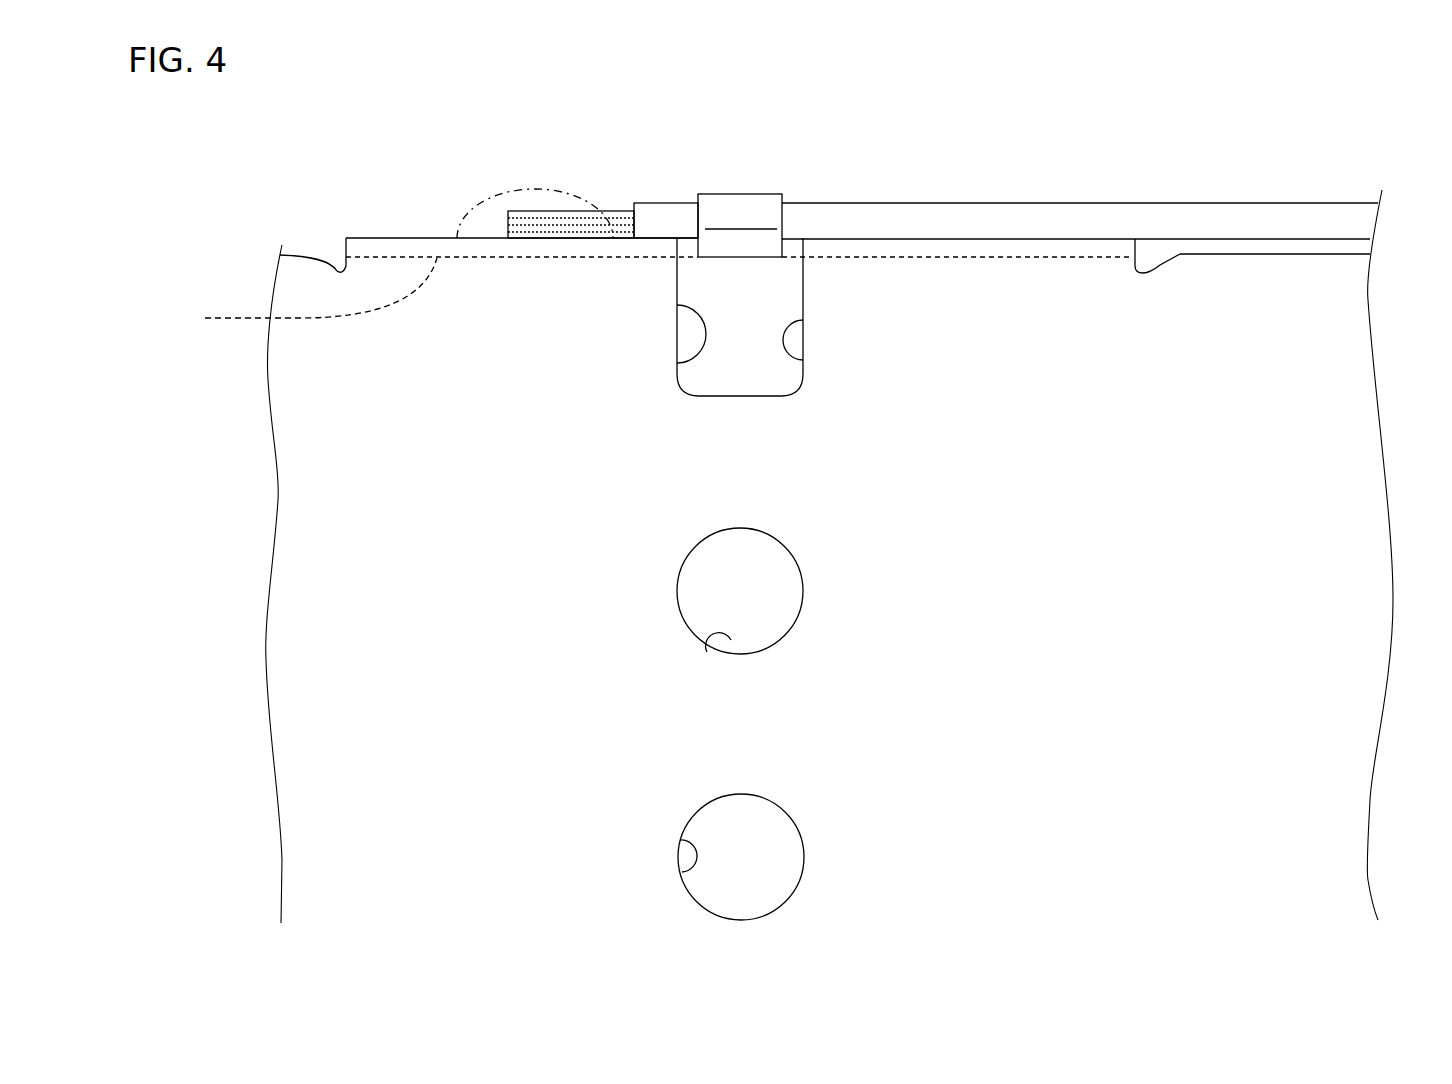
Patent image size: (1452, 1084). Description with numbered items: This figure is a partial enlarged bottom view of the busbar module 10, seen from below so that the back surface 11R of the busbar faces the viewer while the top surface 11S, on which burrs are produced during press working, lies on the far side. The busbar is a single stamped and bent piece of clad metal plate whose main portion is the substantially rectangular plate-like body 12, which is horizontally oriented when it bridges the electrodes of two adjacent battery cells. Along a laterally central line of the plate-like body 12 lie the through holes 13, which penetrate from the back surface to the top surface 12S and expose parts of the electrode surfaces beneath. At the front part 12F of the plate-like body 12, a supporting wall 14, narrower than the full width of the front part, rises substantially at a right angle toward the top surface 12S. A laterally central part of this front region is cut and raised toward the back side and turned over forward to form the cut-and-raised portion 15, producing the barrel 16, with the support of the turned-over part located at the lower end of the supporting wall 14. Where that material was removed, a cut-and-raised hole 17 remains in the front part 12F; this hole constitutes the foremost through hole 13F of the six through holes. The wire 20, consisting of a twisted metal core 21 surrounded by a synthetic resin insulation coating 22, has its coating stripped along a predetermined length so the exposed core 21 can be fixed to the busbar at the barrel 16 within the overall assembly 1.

The vehicle body structure 1 is at (1411, 765).
The busbar module 10 is at (1226, 153).
The back surface of the busbar 11R is at (362, 238).
The top surface of the busbar 11S is at (766, 125).
The plate-like body 12 is at (320, 500).
The front part of the plate-like body 12F is at (1292, 254).
The top surface of the plate-like body 12S is at (305, 622).
The through holes 13 is at (731, 641).
The foremost through hole 13F is at (677, 363).
The supporting wall 14 is at (408, 238).
The cut-and-raised portion 15 is at (783, 215).
The barrel 16 is at (720, 205).
The cut-and-raised hole 17 is at (803, 360).
The wire 20 is at (552, 91).
The core 21 is at (543, 222).
The insulation coating 22 is at (655, 215).